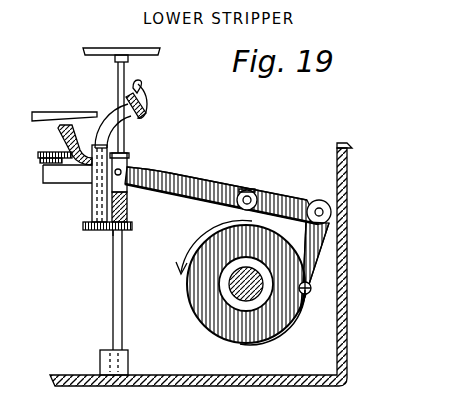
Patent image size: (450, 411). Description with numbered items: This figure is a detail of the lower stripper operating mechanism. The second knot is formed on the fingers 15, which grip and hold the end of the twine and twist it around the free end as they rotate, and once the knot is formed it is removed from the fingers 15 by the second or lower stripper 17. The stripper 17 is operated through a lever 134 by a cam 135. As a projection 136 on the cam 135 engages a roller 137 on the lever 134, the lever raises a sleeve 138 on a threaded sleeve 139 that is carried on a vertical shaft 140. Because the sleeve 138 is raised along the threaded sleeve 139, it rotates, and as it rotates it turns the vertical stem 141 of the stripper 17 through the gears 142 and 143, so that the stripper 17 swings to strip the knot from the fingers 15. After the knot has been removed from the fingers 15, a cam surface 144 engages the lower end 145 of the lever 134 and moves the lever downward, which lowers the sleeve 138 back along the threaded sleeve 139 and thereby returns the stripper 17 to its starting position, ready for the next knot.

The fingers 15 is at (140, 85).
The second or lower stripper 17 is at (149, 101).
The lever 134 is at (178, 182).
The cam 135 is at (192, 302).
The projection 136 is at (210, 247).
The roller 137 is at (250, 190).
The sleeve 138 is at (130, 163).
The threaded sleeve 139 is at (128, 215).
The vertical shaft 140 is at (113, 296).
The vertical stem 141 is at (97, 135).
The gear 142 is at (113, 236).
The gear 143 is at (83, 228).
The cam surface 144 is at (288, 335).
The lower end of the lever 145 is at (311, 289).